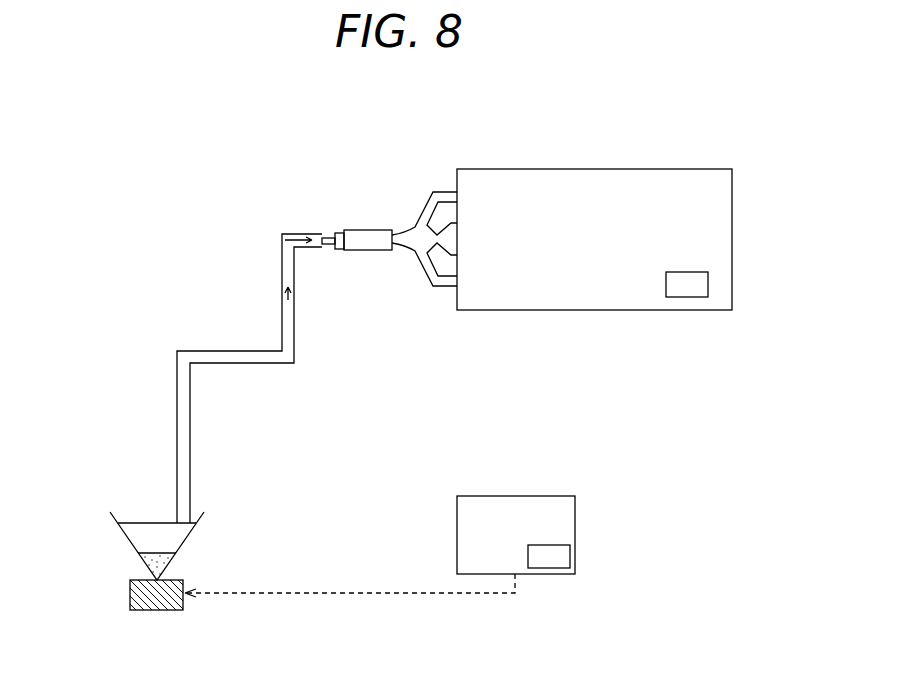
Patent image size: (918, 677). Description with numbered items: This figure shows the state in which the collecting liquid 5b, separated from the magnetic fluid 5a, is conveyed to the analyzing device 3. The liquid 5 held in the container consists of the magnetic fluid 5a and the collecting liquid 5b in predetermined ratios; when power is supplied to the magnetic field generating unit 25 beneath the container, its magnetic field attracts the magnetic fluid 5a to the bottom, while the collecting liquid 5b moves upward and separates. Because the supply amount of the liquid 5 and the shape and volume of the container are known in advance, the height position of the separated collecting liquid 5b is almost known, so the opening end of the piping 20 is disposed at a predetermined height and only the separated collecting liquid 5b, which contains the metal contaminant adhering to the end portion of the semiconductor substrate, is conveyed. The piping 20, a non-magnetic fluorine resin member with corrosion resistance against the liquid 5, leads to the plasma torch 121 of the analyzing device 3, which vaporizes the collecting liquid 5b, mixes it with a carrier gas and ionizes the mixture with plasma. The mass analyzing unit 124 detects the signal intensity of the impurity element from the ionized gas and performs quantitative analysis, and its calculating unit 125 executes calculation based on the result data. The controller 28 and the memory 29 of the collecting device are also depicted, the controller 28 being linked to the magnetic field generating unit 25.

The analyzing device 3 is at (562, 221).
The mass analyzing unit 124 is at (507, 169).
The calculating unit 125 is at (690, 297).
The plasma torch 121 is at (366, 230).
The piping 20 is at (280, 363).
The liquid 5 is at (210, 547).
The magnetic fluid 5a is at (172, 564).
The collecting liquid 5b is at (170, 542).
The magnetic field generating unit 25 is at (130, 596).
The controller 28 is at (380, 534).
The memory 29 is at (556, 568).